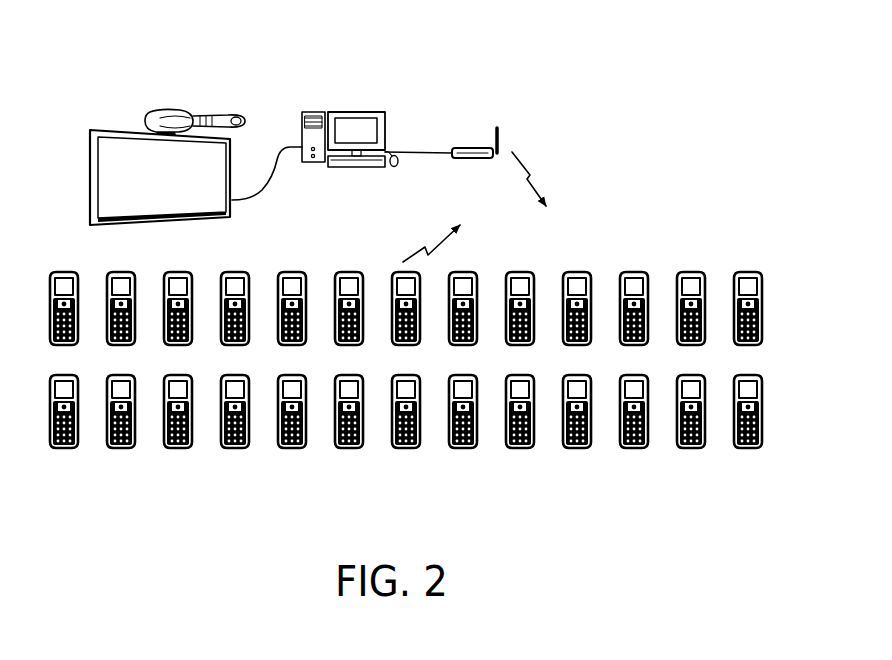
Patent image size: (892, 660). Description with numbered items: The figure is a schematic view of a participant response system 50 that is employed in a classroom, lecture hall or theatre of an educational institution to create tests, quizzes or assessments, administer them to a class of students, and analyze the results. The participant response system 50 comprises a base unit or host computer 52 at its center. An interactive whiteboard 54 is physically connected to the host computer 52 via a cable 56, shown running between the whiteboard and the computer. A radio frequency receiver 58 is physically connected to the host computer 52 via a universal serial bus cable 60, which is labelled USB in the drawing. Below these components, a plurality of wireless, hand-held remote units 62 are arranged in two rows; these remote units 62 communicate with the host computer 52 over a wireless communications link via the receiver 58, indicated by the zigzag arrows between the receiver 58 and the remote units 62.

The participant response system 50 is at (697, 130).
The host computer 52 is at (321, 112).
The interactive whiteboard 54 is at (123, 110).
The cable 56 is at (272, 178).
The radio frequency receiver 58 is at (477, 148).
The universal serial bus cable 60 is at (414, 152).
The wireless hand-held remote units 62 is at (633, 272).